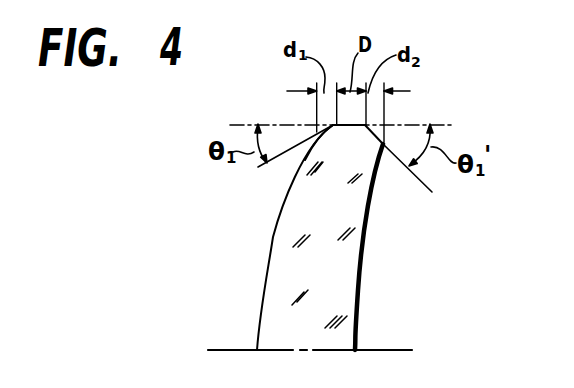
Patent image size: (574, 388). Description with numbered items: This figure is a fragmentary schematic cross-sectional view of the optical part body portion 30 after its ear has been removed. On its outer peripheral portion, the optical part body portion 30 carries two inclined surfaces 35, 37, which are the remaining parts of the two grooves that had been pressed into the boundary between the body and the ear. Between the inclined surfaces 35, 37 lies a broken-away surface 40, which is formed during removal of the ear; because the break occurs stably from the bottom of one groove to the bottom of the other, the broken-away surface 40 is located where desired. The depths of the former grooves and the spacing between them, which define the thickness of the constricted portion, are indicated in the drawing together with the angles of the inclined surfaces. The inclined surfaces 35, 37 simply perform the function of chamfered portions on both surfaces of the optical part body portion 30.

The optical part body portion 30 is at (337, 284).
The inclined surface 35 is at (328, 125).
The inclined surface 37 is at (367, 127).
The broken-away surface 40 is at (348, 124).